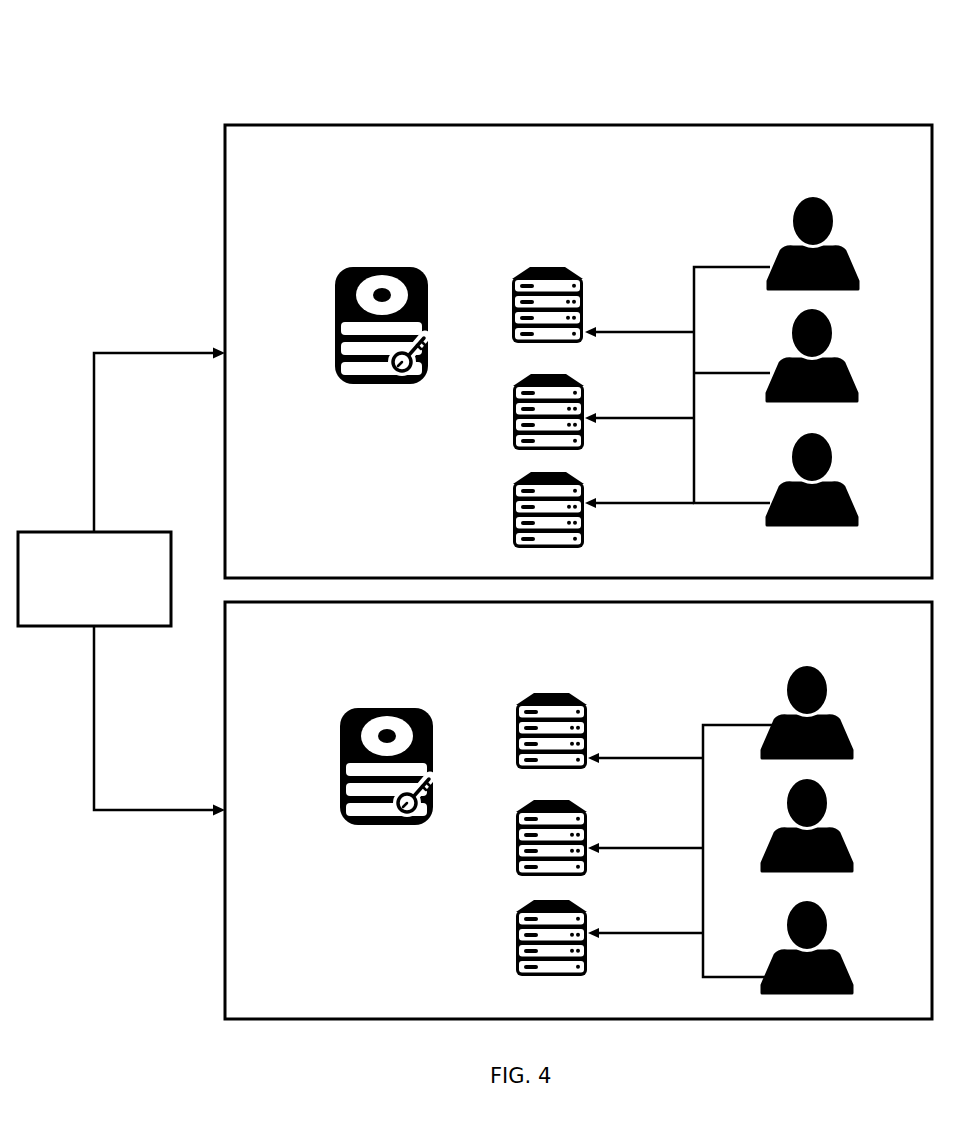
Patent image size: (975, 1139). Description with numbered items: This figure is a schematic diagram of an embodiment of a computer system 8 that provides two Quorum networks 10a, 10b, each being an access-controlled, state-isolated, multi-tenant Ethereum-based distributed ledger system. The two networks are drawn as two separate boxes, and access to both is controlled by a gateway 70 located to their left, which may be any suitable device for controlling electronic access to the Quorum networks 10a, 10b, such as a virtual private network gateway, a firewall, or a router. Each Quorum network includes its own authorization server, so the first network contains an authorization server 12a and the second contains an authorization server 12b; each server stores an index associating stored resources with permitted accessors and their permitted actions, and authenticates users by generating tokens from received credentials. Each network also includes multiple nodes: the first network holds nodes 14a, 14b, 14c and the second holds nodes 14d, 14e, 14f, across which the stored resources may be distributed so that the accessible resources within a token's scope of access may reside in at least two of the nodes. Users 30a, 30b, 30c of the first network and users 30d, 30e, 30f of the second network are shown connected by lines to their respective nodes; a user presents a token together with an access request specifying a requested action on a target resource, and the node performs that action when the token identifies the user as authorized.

The computer system 8 is at (168, 44).
The Quorum network 10a is at (688, 160).
The Quorum network 10b is at (688, 635).
The authorization server 12a is at (337, 281).
The authorization server 12b is at (341, 729).
The node 14a is at (553, 268).
The node 14b is at (513, 418).
The node 14c is at (513, 527).
The node 14d is at (516, 745).
The node 14e is at (516, 848).
The node 14f is at (516, 952).
The user 30a is at (793, 222).
The user 30b is at (792, 336).
The user 30c is at (792, 461).
The user 30d is at (793, 686).
The user 30e is at (792, 812).
The user 30f is at (792, 933).
The gateway 70 is at (82, 606).